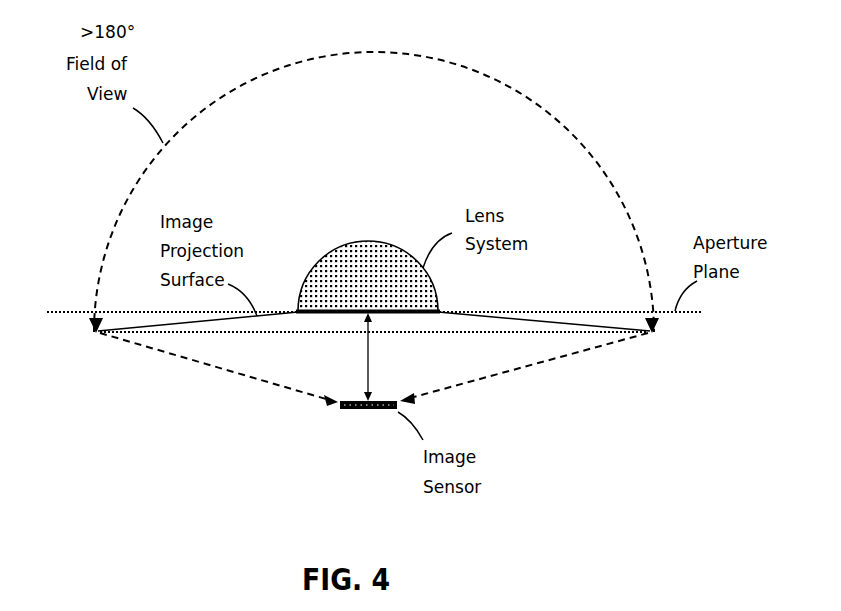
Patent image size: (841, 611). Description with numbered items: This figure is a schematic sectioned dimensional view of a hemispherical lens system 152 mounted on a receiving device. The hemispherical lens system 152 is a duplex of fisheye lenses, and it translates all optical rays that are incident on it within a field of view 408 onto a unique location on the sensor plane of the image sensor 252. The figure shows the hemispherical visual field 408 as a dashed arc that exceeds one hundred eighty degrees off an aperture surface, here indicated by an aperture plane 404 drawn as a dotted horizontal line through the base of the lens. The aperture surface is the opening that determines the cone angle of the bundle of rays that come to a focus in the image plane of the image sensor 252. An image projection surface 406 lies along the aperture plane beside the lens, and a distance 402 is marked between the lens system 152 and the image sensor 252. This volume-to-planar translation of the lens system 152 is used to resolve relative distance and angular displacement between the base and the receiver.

The hemispherical lens system 152 is at (364, 243).
The image sensor 252 is at (365, 424).
The distance 402 is at (414, 355).
The aperture plane 404 is at (687, 326).
The image projection surface 406 is at (273, 299).
The field of view 408 is at (122, 180).